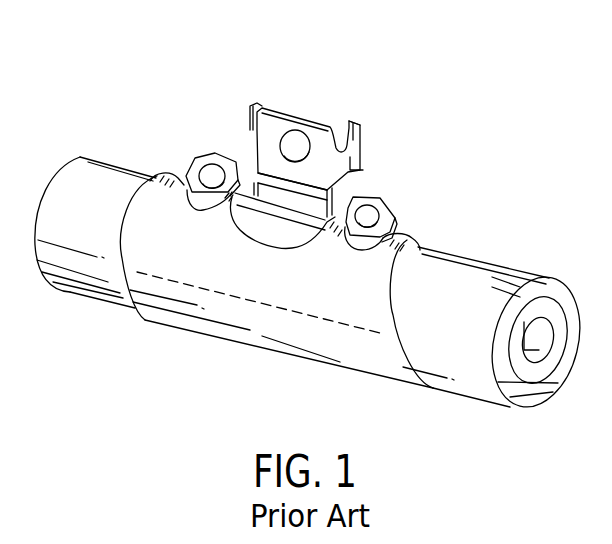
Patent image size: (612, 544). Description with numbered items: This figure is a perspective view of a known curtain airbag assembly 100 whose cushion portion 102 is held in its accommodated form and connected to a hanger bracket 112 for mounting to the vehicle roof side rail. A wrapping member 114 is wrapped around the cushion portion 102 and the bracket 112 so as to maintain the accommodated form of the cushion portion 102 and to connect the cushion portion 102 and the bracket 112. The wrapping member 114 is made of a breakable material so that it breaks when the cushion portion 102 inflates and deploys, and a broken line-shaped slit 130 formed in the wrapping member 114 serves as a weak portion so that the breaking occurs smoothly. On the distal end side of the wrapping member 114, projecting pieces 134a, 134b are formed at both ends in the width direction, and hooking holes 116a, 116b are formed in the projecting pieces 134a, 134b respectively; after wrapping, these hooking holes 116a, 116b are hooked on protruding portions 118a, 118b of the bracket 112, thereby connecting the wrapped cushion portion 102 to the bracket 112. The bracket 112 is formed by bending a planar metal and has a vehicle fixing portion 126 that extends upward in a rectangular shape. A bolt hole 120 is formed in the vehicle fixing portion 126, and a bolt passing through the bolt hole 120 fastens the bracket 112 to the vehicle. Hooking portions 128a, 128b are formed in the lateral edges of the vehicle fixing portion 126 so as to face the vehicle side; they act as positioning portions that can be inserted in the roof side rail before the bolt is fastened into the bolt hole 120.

The curtain airbag assembly 100 is at (120, 100).
The cushion portion 102 is at (503, 273).
The hanger bracket 112 is at (321, 125).
The wrapping member 114 is at (355, 372).
The hooking hole 116a is at (190, 143).
The hooking hole 116b is at (419, 194).
The protruding portion 118a is at (220, 165).
The protruding portion 118b is at (380, 200).
The bolt hole 120 is at (300, 131).
The vehicle fixing portion 126 is at (317, 168).
The hooking portion 128a is at (258, 103).
The hooking portion 128b is at (357, 133).
The broken line-shaped slit 130 is at (163, 278).
The projecting piece 134a is at (157, 174).
The projecting piece 134b is at (412, 246).